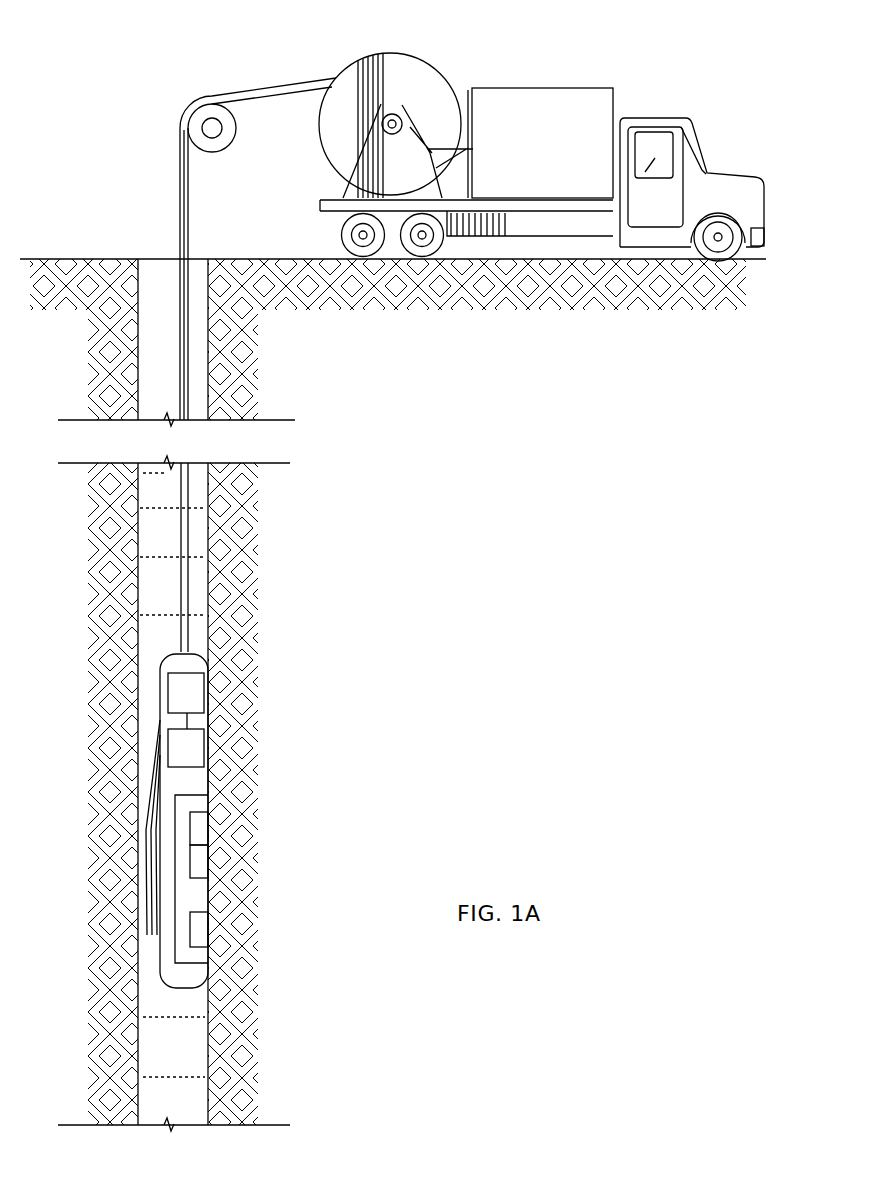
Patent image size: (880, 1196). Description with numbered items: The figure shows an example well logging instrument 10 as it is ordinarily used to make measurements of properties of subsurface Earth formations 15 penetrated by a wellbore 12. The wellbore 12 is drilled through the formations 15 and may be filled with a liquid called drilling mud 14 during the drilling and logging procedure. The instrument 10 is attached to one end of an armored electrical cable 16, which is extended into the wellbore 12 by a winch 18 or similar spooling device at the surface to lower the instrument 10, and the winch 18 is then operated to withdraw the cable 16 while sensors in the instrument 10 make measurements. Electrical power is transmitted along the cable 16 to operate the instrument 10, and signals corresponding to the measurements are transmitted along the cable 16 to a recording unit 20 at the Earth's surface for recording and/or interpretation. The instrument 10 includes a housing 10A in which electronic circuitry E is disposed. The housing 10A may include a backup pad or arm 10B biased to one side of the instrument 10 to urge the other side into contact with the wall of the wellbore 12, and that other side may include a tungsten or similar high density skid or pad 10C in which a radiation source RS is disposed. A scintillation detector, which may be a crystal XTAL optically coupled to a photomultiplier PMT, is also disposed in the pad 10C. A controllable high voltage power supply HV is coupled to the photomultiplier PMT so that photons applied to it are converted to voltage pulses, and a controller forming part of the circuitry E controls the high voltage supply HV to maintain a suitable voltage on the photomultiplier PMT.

The well logging instrument 10 is at (160, 940).
The housing 10A is at (160, 722).
The backup pad or arm 10B is at (150, 829).
The skid or pad 10C is at (163, 887).
The wellbore 12 is at (160, 590).
The drilling mud 14 is at (157, 259).
The formations 15 is at (255, 1003).
The armored electrical cable 16 is at (192, 532).
The winch 18 is at (403, 53).
The recording unit 20 is at (540, 88).
The electronic circuitry E is at (187, 690).
The high voltage power supply HV is at (187, 747).
The photomultiplier PMT is at (200, 820).
The crystal XTAL is at (202, 858).
The radiation source RS is at (202, 930).